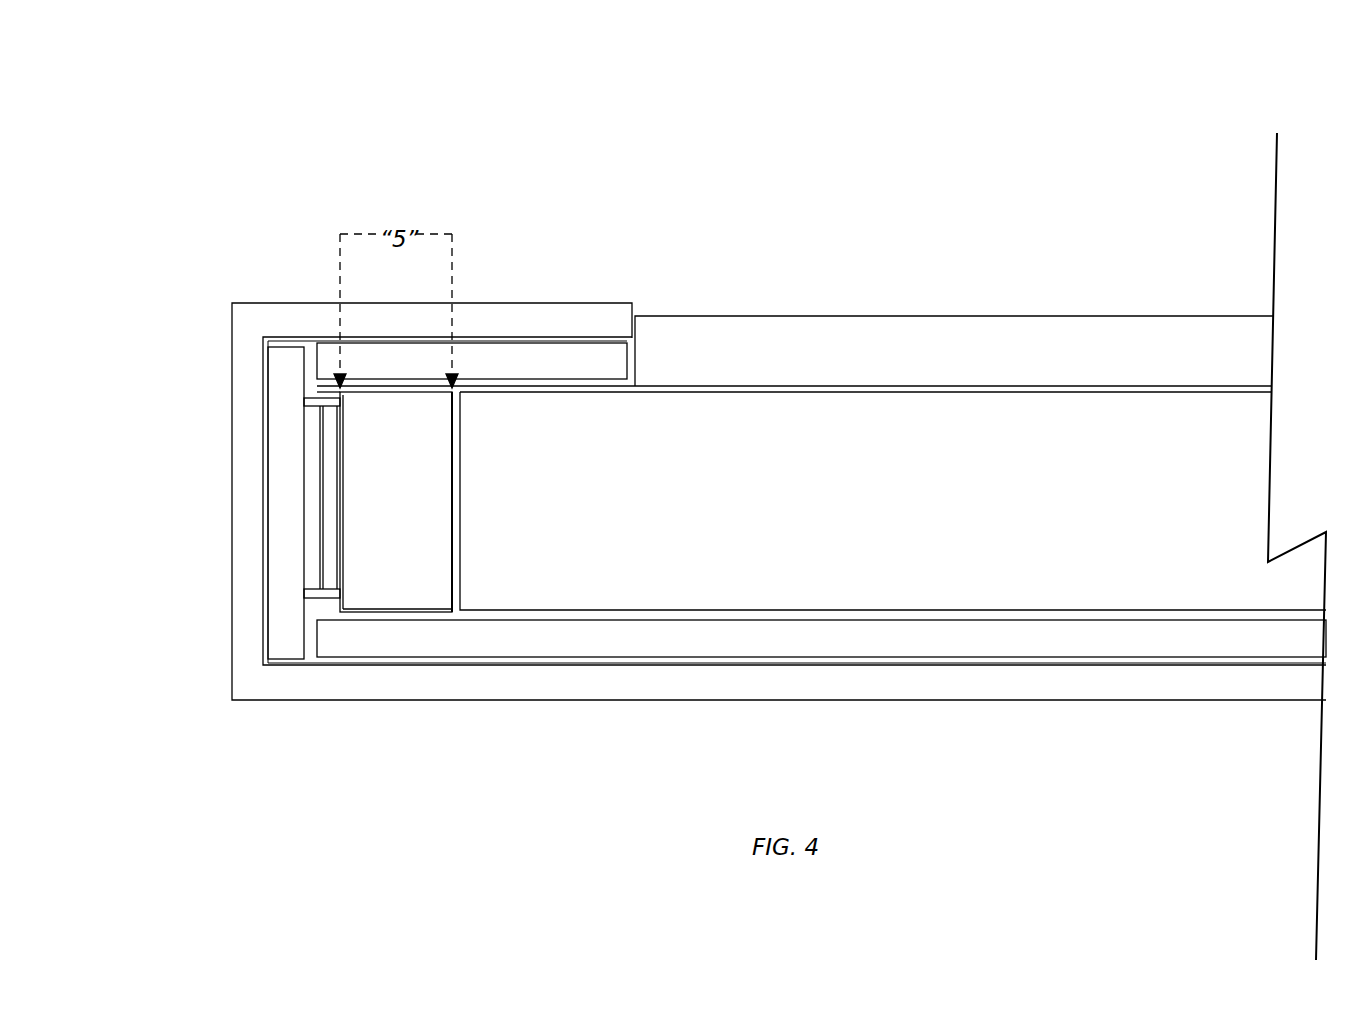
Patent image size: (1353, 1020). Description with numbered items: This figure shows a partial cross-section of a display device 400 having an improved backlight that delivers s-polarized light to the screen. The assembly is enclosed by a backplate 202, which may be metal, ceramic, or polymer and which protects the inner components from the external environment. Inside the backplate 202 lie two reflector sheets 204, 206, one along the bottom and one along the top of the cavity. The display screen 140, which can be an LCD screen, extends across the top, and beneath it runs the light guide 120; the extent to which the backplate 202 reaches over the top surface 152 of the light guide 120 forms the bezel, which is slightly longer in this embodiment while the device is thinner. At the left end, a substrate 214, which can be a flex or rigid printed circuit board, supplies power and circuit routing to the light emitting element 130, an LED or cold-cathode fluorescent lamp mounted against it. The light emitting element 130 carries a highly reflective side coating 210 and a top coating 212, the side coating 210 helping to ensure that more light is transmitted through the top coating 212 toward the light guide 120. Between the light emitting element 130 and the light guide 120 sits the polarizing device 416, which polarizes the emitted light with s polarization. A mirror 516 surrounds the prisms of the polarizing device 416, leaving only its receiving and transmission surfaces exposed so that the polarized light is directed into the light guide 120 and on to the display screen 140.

The display device 400 is at (138, 118).
The backplate 202 is at (795, 705).
The reflector sheet 204 is at (1211, 620).
The reflector sheet 206 is at (637, 370).
The display screen 140 is at (1222, 330).
The top surface 152 is at (838, 393).
The light guide 120 is at (975, 398).
The substrate 214 is at (289, 408).
The light emitting element 130 is at (306, 465).
The side coating 210 is at (330, 405).
The top coating 212 is at (333, 472).
The polarizing device 416 is at (438, 455).
The mirror 516 is at (363, 390).